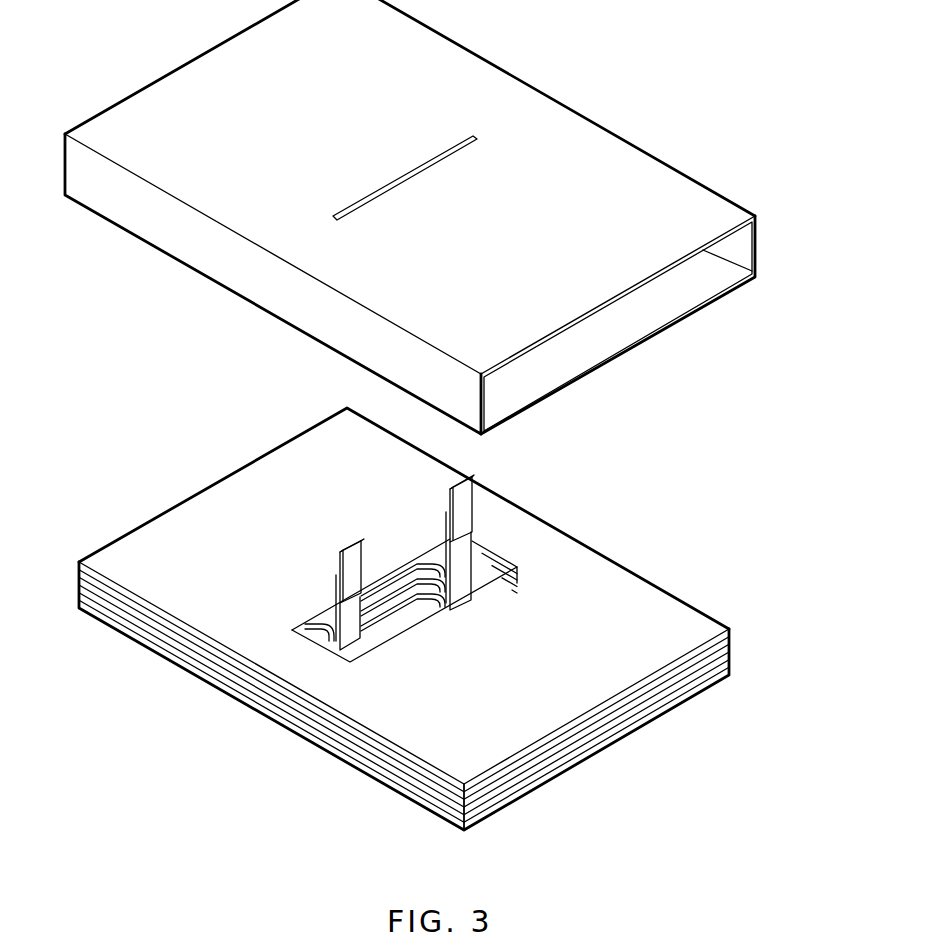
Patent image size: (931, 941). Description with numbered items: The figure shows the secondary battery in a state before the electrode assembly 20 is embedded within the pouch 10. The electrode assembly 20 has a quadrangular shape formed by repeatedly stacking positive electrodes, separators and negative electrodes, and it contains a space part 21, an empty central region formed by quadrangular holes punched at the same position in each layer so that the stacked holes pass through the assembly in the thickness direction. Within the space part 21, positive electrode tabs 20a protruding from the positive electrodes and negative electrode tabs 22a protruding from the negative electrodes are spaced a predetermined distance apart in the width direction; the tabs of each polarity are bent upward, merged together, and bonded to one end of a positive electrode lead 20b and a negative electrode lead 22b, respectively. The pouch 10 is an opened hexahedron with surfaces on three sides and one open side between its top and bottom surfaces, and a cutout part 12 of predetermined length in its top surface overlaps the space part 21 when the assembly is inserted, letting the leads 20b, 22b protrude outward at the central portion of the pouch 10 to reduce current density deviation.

The pouch 10 is at (545, 94).
The cutout part 12 is at (403, 177).
The electrode assembly 20 is at (642, 578).
The positive electrode tab 20a is at (337, 635).
The positive electrode lead 20b is at (350, 558).
The space part 21 is at (397, 624).
The negative electrode tab 22a is at (462, 578).
The negative electrode lead 22b is at (468, 507).